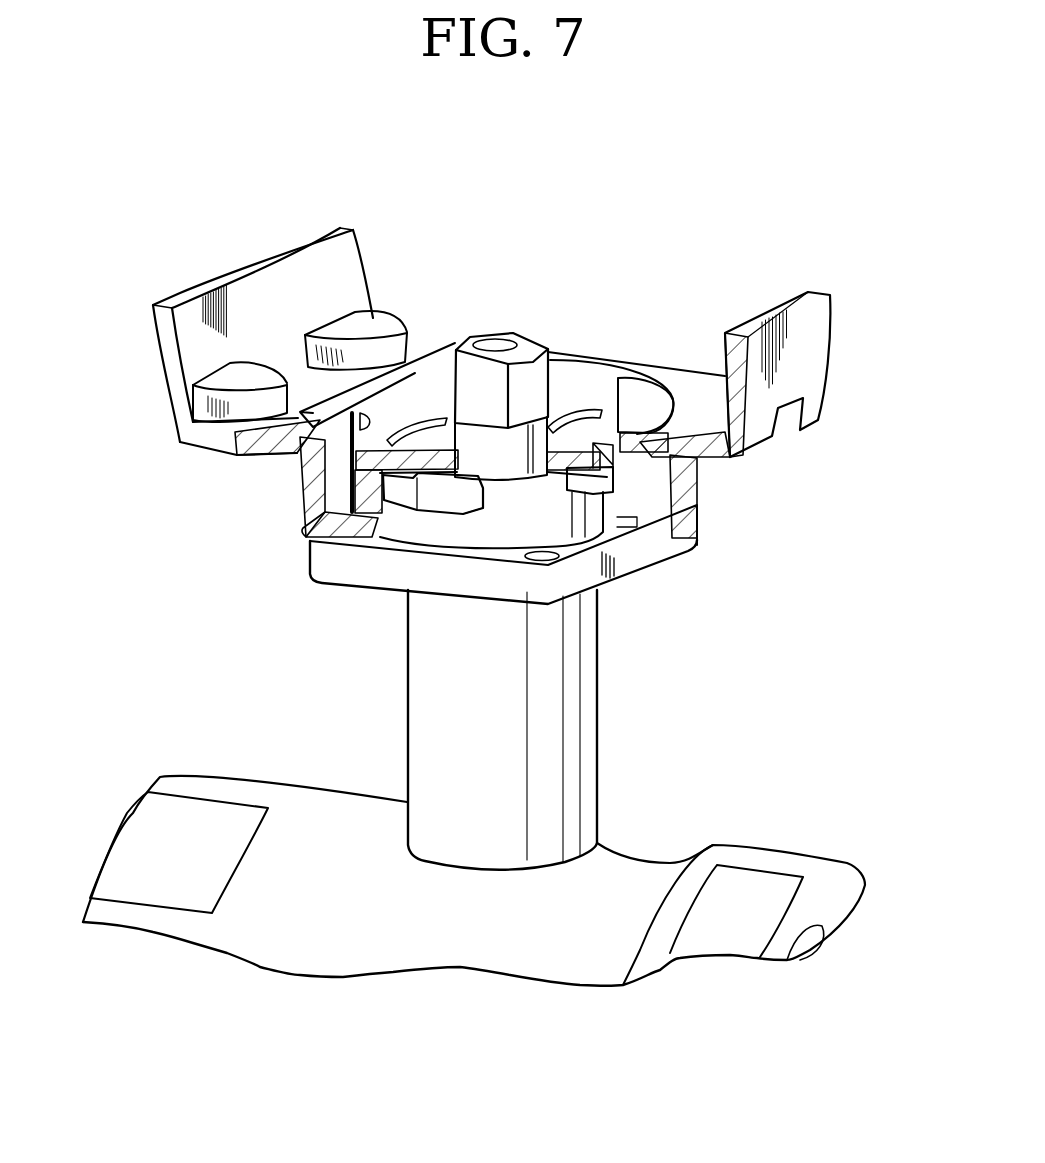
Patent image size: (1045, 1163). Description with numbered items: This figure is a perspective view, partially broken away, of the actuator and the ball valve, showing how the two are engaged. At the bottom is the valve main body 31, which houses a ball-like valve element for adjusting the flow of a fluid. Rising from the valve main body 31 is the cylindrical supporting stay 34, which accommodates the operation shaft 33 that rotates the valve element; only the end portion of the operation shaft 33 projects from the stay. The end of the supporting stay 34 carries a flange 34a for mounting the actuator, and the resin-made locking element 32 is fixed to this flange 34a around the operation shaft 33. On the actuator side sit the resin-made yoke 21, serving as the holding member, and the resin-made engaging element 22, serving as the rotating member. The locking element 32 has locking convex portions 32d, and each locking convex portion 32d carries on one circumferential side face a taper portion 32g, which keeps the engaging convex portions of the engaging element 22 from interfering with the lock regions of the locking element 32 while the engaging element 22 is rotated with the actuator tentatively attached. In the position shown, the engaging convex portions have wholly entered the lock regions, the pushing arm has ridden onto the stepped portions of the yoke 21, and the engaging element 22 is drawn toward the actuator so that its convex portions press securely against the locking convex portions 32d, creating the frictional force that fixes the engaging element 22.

The yoke 21 is at (805, 353).
The engaging element 22 is at (625, 430).
The valve main body 31 is at (620, 893).
The locking element 32 is at (501, 587).
The locking convex portion 32d is at (432, 500).
The taper portion 32g is at (465, 515).
The operation shaft 33 is at (498, 345).
The supporting stay 34 is at (572, 710).
The flange 34a is at (670, 565).